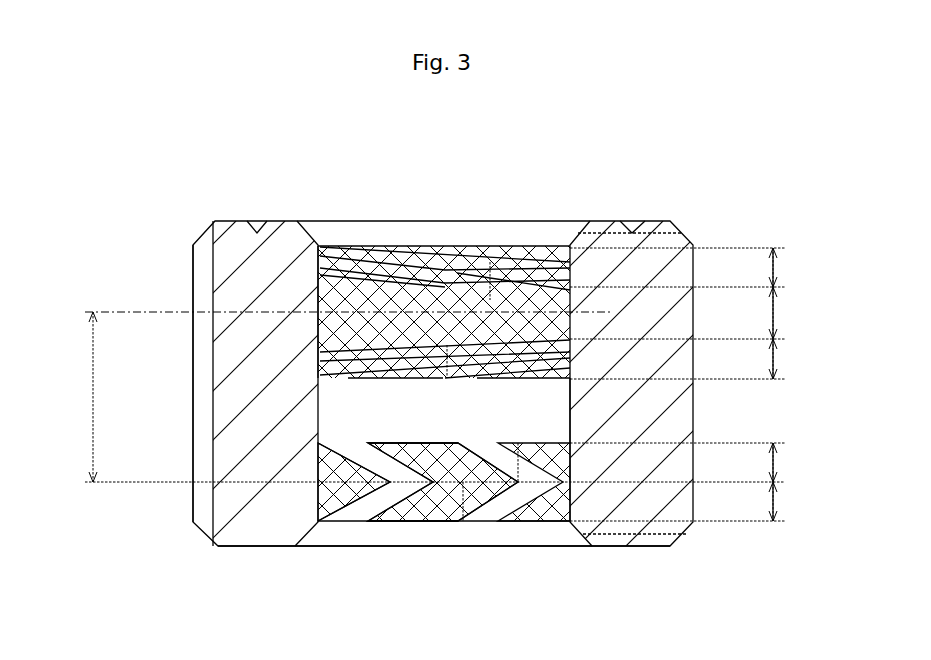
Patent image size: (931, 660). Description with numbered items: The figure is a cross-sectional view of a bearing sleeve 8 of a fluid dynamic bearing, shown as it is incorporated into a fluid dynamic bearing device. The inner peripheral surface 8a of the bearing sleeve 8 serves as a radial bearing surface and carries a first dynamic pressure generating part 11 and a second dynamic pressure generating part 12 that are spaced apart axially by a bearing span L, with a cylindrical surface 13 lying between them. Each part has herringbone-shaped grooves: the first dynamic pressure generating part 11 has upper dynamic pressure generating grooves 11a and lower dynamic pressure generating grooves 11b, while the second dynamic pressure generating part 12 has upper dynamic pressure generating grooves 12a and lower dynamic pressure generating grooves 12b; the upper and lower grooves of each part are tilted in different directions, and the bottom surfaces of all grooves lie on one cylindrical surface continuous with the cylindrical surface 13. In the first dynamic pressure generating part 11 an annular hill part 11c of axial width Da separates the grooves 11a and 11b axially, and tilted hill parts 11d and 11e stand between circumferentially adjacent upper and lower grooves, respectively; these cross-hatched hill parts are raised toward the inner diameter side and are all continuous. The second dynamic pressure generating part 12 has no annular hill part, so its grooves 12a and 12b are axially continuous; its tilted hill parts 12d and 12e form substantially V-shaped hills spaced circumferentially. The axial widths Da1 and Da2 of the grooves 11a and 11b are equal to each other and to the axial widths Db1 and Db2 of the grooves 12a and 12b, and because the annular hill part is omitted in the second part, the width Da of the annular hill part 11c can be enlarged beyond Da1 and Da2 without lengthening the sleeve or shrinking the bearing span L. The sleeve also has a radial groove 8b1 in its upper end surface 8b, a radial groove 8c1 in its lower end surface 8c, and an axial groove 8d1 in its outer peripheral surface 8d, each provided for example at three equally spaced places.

The bearing sleeve 8 is at (598, 198).
The inner peripheral surface 8a is at (537, 521).
The upper end surface 8b is at (634, 230).
The radial groove 8b1 is at (663, 232).
The lower end surface 8c is at (617, 548).
The radial groove 8c1 is at (652, 536).
The outer peripheral surface 8d is at (193, 492).
The axial groove 8d1 is at (213, 510).
The first dynamic pressure generating part 11 is at (335, 280).
The dynamic pressure generating groove 11a is at (348, 262).
The dynamic pressure generating groove 11b is at (332, 330).
The annular hill part 11c is at (535, 262).
The tilted hill part 11d is at (376, 266).
The tilted hill part 11e is at (386, 380).
The second dynamic pressure generating part 12 is at (336, 466).
The dynamic pressure generating groove 12a is at (340, 430).
The dynamic pressure generating groove 12b is at (357, 521).
The tilted hill part 12d is at (425, 443).
The tilted hill part 12e is at (420, 521).
The cylindrical surface 13 is at (572, 400).
The bearing span L is at (92, 407).
The axial width Da1 is at (778, 268).
The axial width Da is at (778, 313).
The axial width Da2 is at (778, 358).
The axial width Db1 is at (778, 463).
The axial width Db2 is at (778, 506).